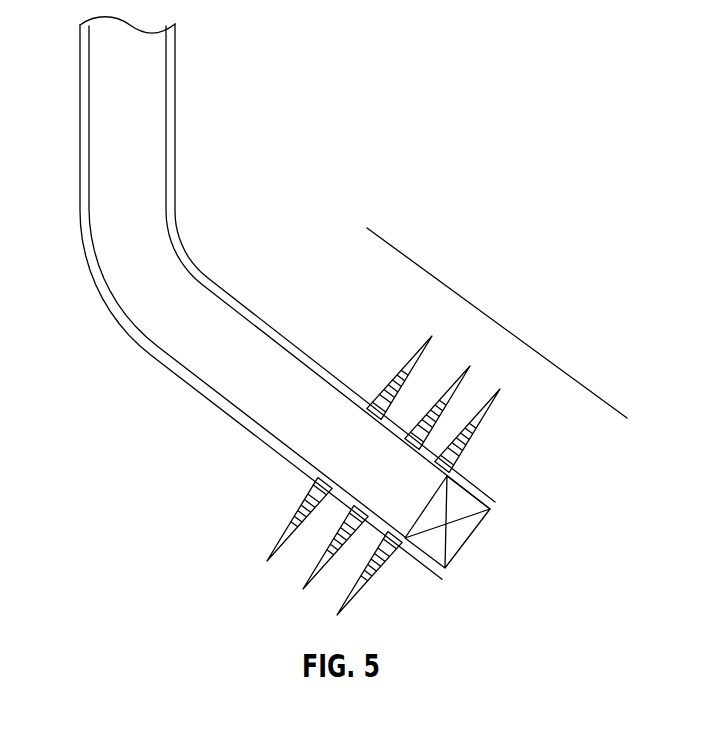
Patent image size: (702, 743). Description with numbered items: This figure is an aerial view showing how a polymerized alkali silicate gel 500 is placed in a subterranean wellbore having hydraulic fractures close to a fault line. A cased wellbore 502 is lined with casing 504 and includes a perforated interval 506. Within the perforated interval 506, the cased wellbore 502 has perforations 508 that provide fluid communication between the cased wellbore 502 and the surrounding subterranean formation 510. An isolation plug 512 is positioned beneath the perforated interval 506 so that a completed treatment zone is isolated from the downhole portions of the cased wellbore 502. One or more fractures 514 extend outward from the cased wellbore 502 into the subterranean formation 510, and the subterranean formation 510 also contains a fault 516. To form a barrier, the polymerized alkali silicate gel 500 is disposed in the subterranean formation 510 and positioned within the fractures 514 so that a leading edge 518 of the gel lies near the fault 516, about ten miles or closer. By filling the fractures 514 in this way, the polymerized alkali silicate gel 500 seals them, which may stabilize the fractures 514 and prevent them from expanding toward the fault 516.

The polymerized alkali silicate gel 500 is at (480, 424).
The cased wellbore 502 is at (215, 152).
The casing 504 is at (170, 115).
The perforated interval 506 is at (443, 331).
The perforations 508 is at (364, 395).
The subterranean formation 510 is at (362, 274).
The isolation plug 512 is at (480, 545).
The fractures 514 is at (410, 367).
The fault 516 is at (432, 277).
The leading edge 518 is at (462, 369).